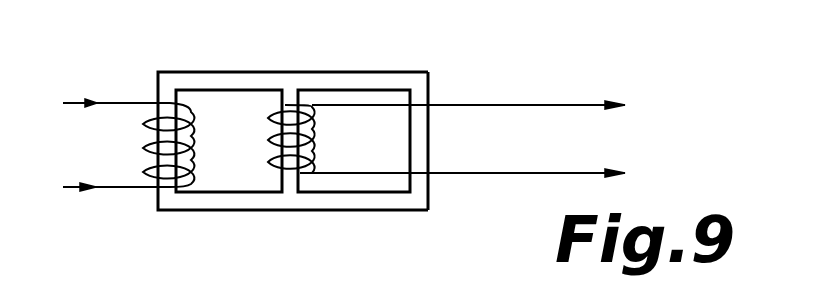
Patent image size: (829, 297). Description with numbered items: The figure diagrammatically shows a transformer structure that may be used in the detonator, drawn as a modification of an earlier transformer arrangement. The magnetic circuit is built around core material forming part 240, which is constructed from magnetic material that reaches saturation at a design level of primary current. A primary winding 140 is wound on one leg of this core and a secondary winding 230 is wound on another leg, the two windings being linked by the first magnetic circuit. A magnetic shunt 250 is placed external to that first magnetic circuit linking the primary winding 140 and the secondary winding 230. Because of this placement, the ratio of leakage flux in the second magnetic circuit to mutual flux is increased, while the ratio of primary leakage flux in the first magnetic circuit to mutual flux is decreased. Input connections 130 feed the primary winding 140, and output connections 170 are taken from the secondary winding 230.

The input terminals 130 is at (78, 105).
The primary winding 140 is at (223, 137).
The output terminals 170 is at (585, 107).
The secondary winding 230 is at (314, 141).
The part of the magnetic circuit 240 is at (272, 78).
The magnetic shunt 250 is at (437, 142).